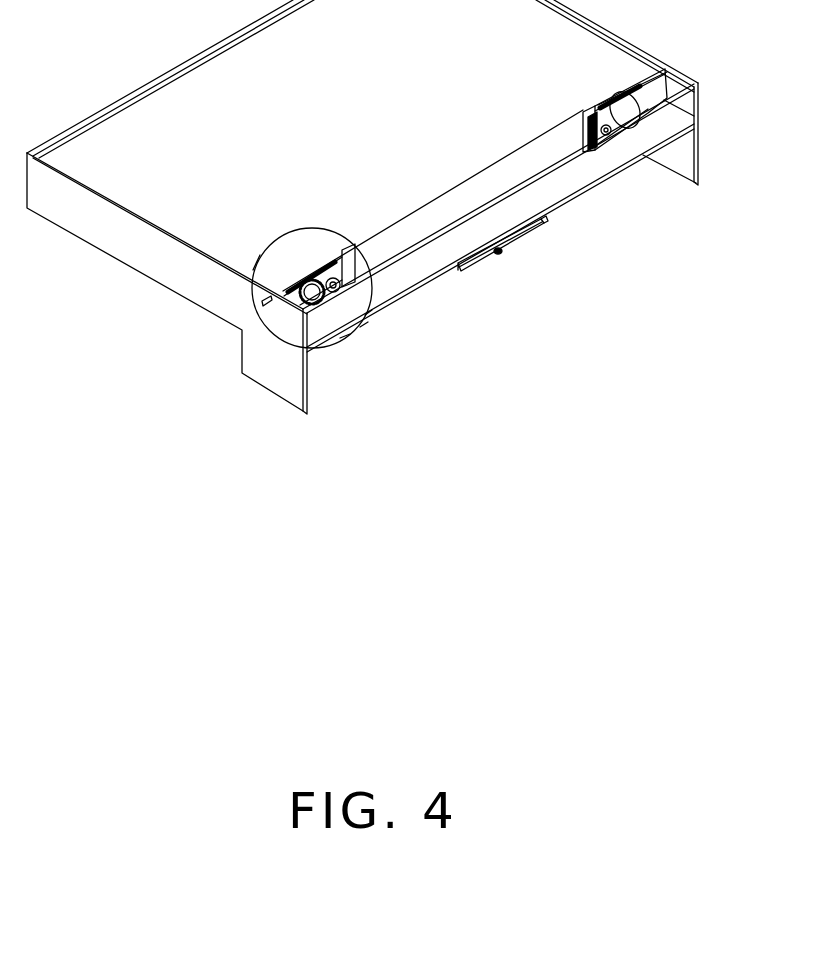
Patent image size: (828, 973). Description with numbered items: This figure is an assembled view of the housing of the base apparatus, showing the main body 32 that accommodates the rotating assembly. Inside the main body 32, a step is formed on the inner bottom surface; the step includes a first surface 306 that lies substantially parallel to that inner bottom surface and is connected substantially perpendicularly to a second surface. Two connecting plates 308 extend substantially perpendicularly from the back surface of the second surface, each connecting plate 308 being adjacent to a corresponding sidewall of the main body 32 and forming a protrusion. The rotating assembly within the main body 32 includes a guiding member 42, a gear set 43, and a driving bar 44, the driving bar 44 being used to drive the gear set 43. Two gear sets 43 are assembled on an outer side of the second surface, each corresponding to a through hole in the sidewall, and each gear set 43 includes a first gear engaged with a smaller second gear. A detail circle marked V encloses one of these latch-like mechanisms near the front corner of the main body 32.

The main body 32 is at (162, 270).
The first surface 306 is at (432, 280).
The connecting plate 308 is at (546, 225).
The guiding member 42 is at (512, 243).
The gear set 43 is at (622, 118).
The driving bar 44 is at (648, 80).
The detail circle V is at (259, 347).